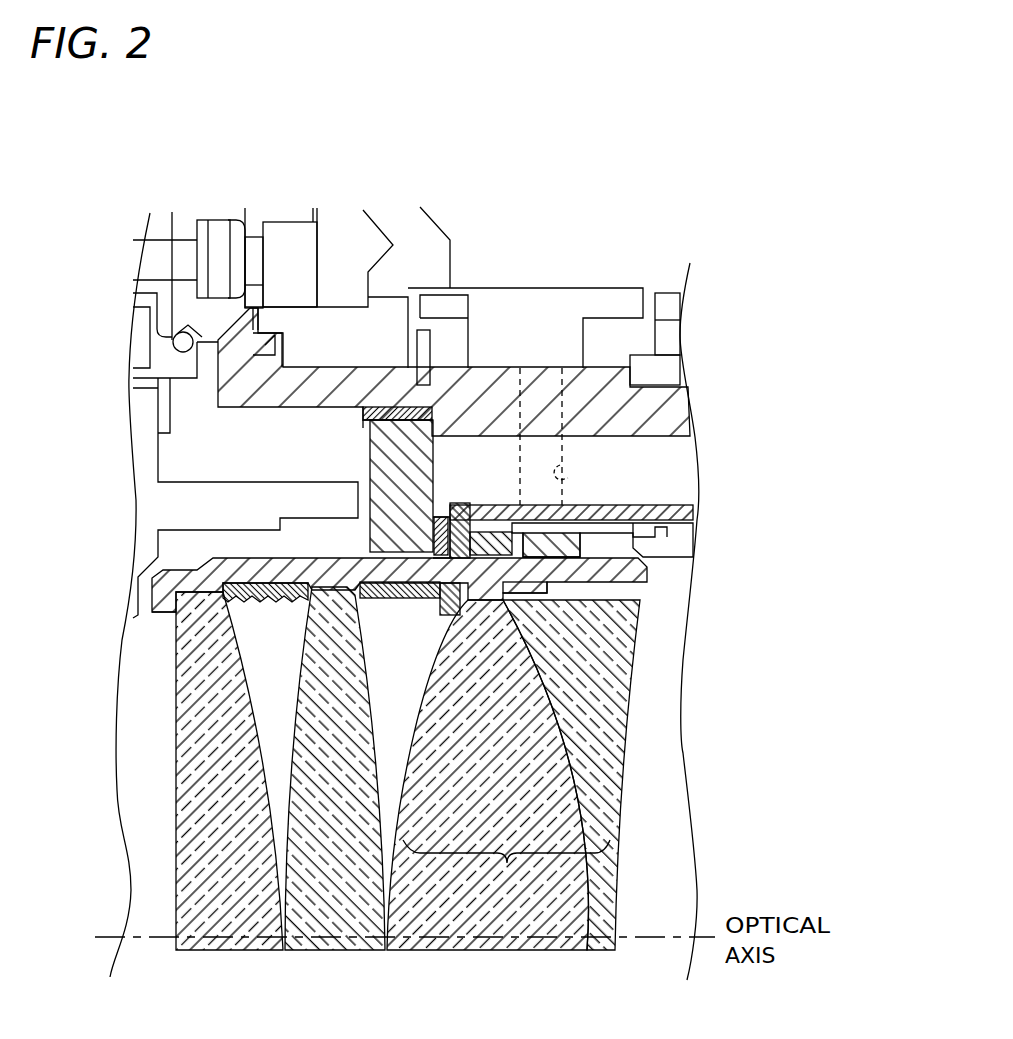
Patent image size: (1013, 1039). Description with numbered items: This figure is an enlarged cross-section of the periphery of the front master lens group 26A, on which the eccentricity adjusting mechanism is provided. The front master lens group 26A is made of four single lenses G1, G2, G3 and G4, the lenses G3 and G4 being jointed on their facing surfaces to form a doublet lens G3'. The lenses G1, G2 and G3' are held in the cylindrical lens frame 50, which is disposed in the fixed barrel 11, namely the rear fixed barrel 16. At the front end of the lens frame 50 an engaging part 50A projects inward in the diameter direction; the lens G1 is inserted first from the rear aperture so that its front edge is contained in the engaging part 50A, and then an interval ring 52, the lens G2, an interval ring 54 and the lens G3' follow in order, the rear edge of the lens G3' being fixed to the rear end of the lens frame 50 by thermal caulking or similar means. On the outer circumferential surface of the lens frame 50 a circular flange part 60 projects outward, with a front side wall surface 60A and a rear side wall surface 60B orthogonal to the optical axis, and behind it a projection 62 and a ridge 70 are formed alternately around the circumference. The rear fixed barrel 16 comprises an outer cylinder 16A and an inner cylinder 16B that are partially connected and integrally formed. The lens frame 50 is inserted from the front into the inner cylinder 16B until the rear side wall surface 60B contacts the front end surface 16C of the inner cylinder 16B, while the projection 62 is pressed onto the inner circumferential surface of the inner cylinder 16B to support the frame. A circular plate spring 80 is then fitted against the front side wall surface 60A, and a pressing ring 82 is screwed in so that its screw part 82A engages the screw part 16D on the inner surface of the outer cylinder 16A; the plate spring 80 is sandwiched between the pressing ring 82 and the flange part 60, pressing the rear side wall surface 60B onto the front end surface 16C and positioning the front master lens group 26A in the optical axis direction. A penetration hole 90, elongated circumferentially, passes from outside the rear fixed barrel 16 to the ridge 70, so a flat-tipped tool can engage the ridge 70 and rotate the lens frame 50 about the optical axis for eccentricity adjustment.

The fixed barrel 11 is at (567, 341).
The rear fixed barrel 16 is at (640, 505).
The outer cylinder 16A is at (657, 417).
The inner cylinder 16B is at (677, 510).
The front end surface 16C is at (464, 608).
The screw part 16D is at (367, 428).
The front master lens group 26A is at (627, 771).
The lens frame 50 is at (297, 557).
The engaging part 50A is at (153, 614).
The interval ring 52 is at (267, 602).
The interval ring 54 is at (403, 600).
The flange part 60 is at (466, 503).
The front side wall surface 60A is at (440, 545).
The rear side wall surface 60B is at (476, 545).
The projection 62 is at (533, 596).
The ridge 70 is at (580, 545).
The plate spring 80 is at (443, 497).
The pressing ring 82 is at (383, 522).
The screw part 82A is at (387, 417).
The penetration hole 90 is at (573, 477).
The lens G1 is at (241, 815).
The lens G2 is at (349, 815).
The lens G3 is at (488, 775).
The doublet lens G3' is at (506, 869).
The lens G4 is at (613, 815).